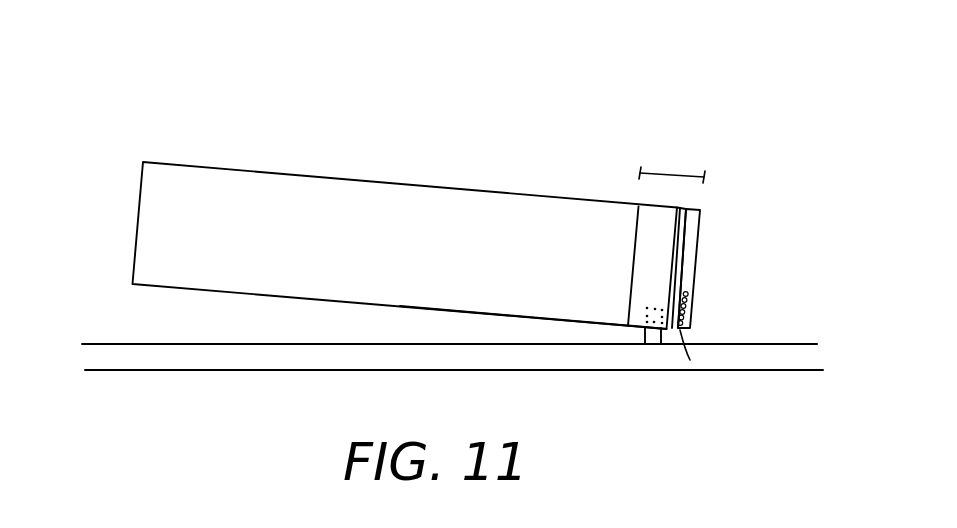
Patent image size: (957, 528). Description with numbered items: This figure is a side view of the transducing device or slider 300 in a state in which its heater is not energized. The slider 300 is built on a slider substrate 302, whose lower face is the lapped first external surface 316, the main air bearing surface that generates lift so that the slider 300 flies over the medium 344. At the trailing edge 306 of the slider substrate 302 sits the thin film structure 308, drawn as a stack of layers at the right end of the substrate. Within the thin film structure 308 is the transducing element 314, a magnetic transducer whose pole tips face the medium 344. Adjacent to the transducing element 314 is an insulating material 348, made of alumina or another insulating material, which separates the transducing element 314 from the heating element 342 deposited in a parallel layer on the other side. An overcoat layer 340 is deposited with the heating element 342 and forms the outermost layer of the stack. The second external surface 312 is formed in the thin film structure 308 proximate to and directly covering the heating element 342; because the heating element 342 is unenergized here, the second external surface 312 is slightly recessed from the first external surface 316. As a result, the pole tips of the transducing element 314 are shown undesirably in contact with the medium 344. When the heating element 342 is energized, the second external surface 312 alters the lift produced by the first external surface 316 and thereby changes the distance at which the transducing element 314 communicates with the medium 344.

The slider 300 is at (785, 90).
The slider substrate 302 is at (185, 201).
The trailing edge 306 is at (633, 235).
The thin film structure 308 is at (668, 172).
The second external surface 312 is at (690, 360).
The transducing element 314 is at (652, 358).
The first external surface 316 is at (515, 320).
The overcoat layer 340 is at (691, 247).
The heating element 342 is at (702, 293).
The medium 344 is at (763, 362).
The insulating material 348 is at (678, 207).